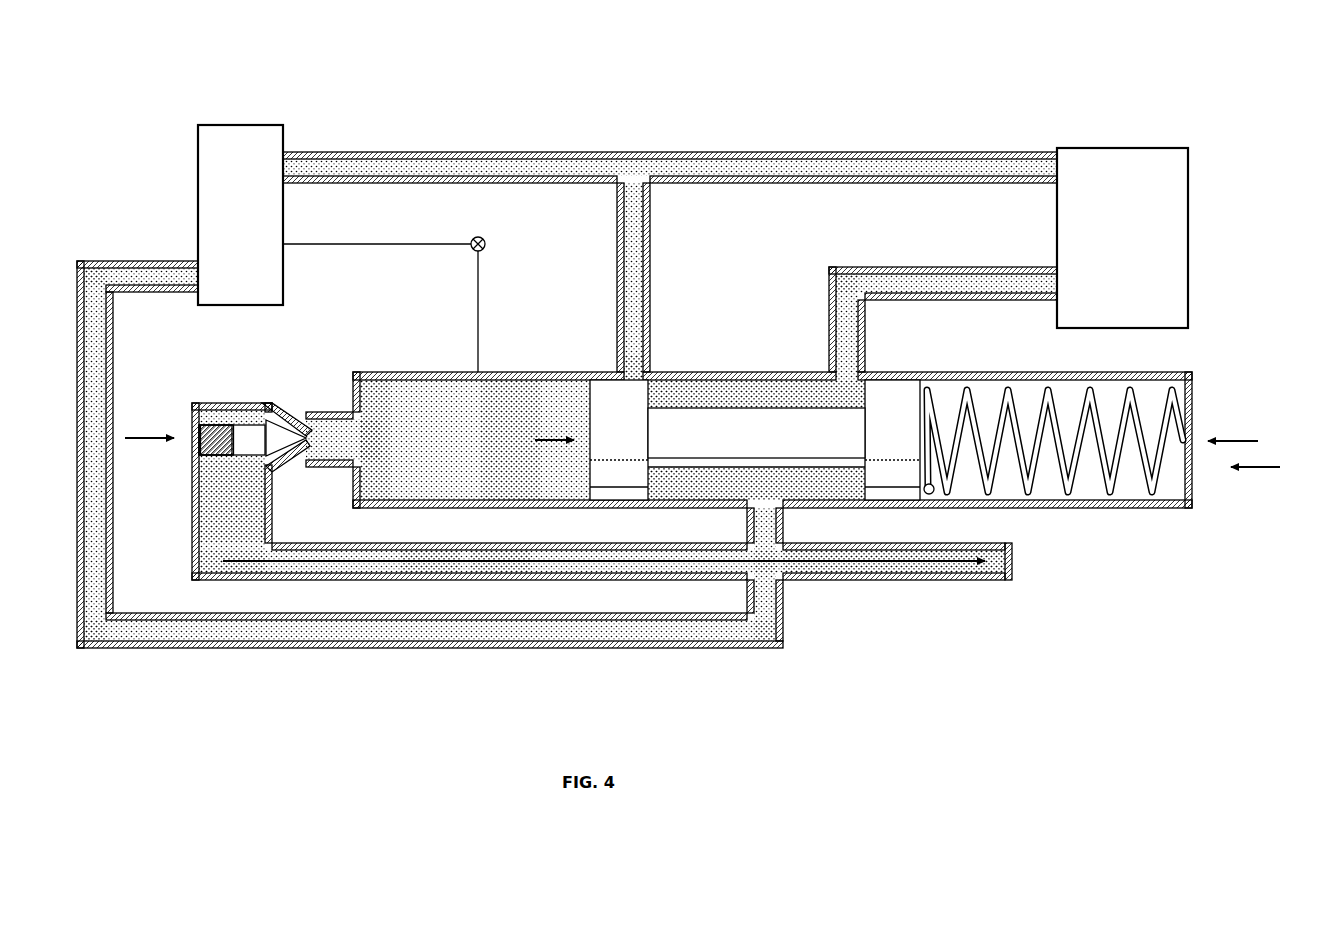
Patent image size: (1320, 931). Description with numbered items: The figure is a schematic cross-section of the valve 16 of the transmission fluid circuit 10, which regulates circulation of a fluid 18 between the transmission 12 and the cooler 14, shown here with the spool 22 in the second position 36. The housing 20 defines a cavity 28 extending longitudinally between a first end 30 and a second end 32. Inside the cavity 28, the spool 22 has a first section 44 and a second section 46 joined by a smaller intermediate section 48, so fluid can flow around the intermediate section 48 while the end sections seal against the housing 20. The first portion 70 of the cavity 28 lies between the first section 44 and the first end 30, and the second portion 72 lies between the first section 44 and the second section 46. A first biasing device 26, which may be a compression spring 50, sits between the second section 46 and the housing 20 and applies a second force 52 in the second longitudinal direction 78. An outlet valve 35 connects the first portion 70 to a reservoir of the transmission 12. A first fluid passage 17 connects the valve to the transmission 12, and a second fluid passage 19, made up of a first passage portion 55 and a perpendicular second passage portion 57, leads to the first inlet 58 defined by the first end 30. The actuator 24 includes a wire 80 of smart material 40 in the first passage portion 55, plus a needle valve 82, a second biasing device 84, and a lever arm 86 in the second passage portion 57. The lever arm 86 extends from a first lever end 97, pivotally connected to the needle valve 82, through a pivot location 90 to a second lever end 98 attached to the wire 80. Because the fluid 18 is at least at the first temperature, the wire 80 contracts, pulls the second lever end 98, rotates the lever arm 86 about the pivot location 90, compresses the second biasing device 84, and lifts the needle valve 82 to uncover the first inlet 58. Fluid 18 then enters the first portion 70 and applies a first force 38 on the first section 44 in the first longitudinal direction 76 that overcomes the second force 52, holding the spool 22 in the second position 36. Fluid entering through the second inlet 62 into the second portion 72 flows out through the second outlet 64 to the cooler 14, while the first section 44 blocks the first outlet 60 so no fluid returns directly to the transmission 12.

The transmission fluid circuit 10 is at (250, 90).
The transmission 12 is at (228, 226).
The cooler 14 is at (1112, 248).
The valve 16 is at (470, 354).
The first fluid passage 17 is at (772, 516).
The fluid 18 is at (500, 170).
The second fluid passage 19 is at (213, 511).
The housing 20 is at (422, 377).
The spool 22 is at (700, 447).
The actuator 24 is at (266, 566).
The first biasing device 26 is at (1032, 500).
The cavity 28 is at (521, 410).
The first end 30 is at (342, 404).
The second end 32 is at (1192, 489).
The outlet valve 35 is at (487, 240).
The second position 36 is at (722, 357).
The first force 38 is at (561, 408).
The smart material 40 is at (430, 562).
The first section 44 is at (609, 445).
The second section 46 is at (882, 445).
The intermediate section 48 is at (747, 445).
The compression spring 50 is at (1078, 500).
The second force 52 is at (1232, 441).
The first passage portion 55 is at (496, 567).
The second passage portion 57 is at (223, 530).
The first inlet 58 is at (360, 438).
The first outlet 60 is at (632, 367).
The second inlet 62 is at (763, 546).
The second outlet 64 is at (850, 364).
The first portion 70 is at (387, 394).
The second portion 72 is at (702, 387).
The first longitudinal direction 76 is at (137, 437).
The second longitudinal direction 78 is at (1268, 467).
The wire 80 is at (340, 552).
The needle valve 82 is at (268, 415).
The second biasing device 84 is at (208, 489).
The lever arm 86 is at (242, 490).
The pivot location 90 is at (245, 500).
The first lever end 97 is at (254, 440).
The second lever end 98 is at (264, 414).